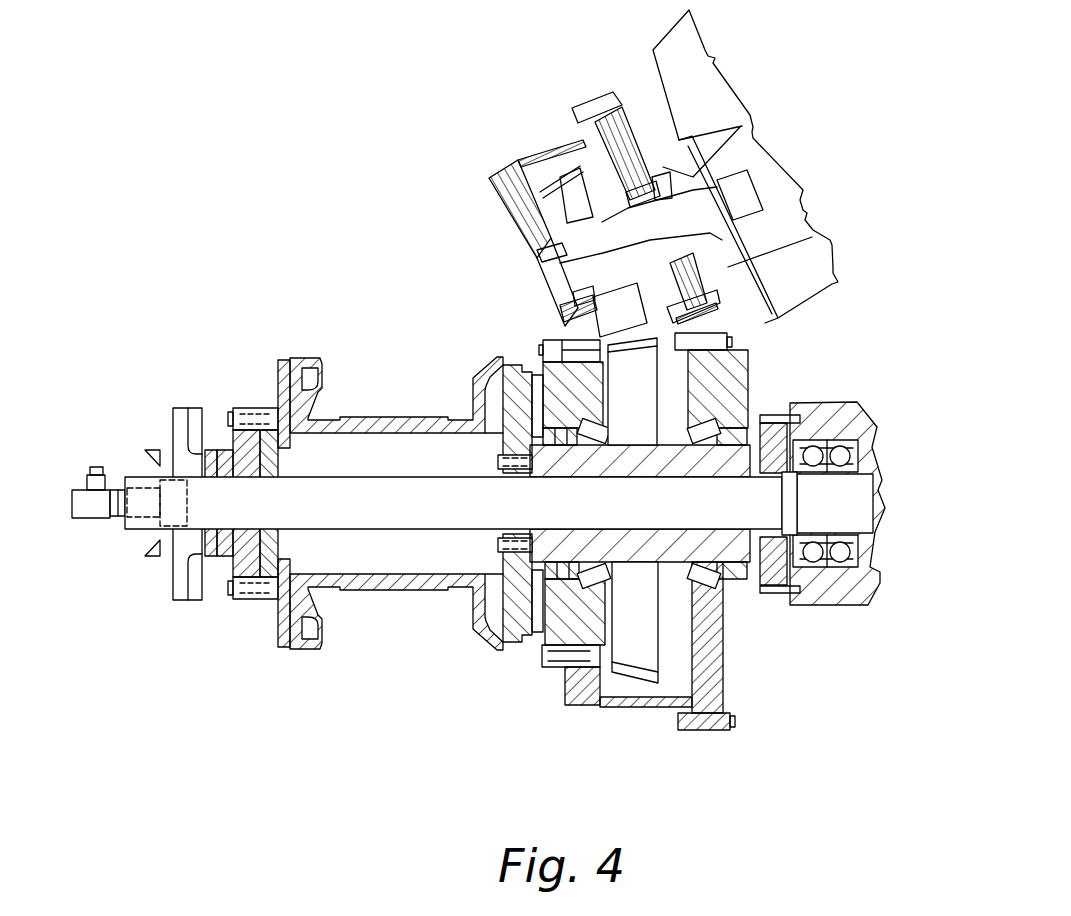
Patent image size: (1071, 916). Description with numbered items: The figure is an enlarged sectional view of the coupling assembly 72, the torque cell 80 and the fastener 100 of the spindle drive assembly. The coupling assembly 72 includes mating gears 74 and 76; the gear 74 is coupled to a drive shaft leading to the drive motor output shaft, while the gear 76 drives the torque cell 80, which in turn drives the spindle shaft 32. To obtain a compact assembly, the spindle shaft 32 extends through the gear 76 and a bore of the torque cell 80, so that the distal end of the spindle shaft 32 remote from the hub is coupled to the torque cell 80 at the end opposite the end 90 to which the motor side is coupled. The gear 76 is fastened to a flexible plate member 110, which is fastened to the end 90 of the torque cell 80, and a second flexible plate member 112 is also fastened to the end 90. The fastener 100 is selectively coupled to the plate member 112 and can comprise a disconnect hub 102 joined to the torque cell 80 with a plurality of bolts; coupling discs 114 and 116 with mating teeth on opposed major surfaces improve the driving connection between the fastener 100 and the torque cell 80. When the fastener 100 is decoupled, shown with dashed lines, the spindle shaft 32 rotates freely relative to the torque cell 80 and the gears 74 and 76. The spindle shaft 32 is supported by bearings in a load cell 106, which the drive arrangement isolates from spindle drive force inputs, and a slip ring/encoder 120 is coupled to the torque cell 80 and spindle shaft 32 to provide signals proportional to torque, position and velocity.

The spindle shaft 32 is at (433, 532).
The coupling assembly 72 is at (530, 136).
The gear 74 is at (552, 228).
The gear 76 is at (658, 652).
The torque cell 80 is at (386, 417).
The end of torque cell 90 is at (498, 362).
The fastener 100 is at (261, 515).
The disconnect hub 102 is at (235, 575).
The load cell 106 is at (813, 605).
The flexible plate member 110 is at (527, 377).
The flexible plate member 112 is at (279, 360).
The coupling disc 114 is at (257, 598).
The coupling disc 116 is at (268, 600).
The slip ring/encoder 120 is at (95, 467).